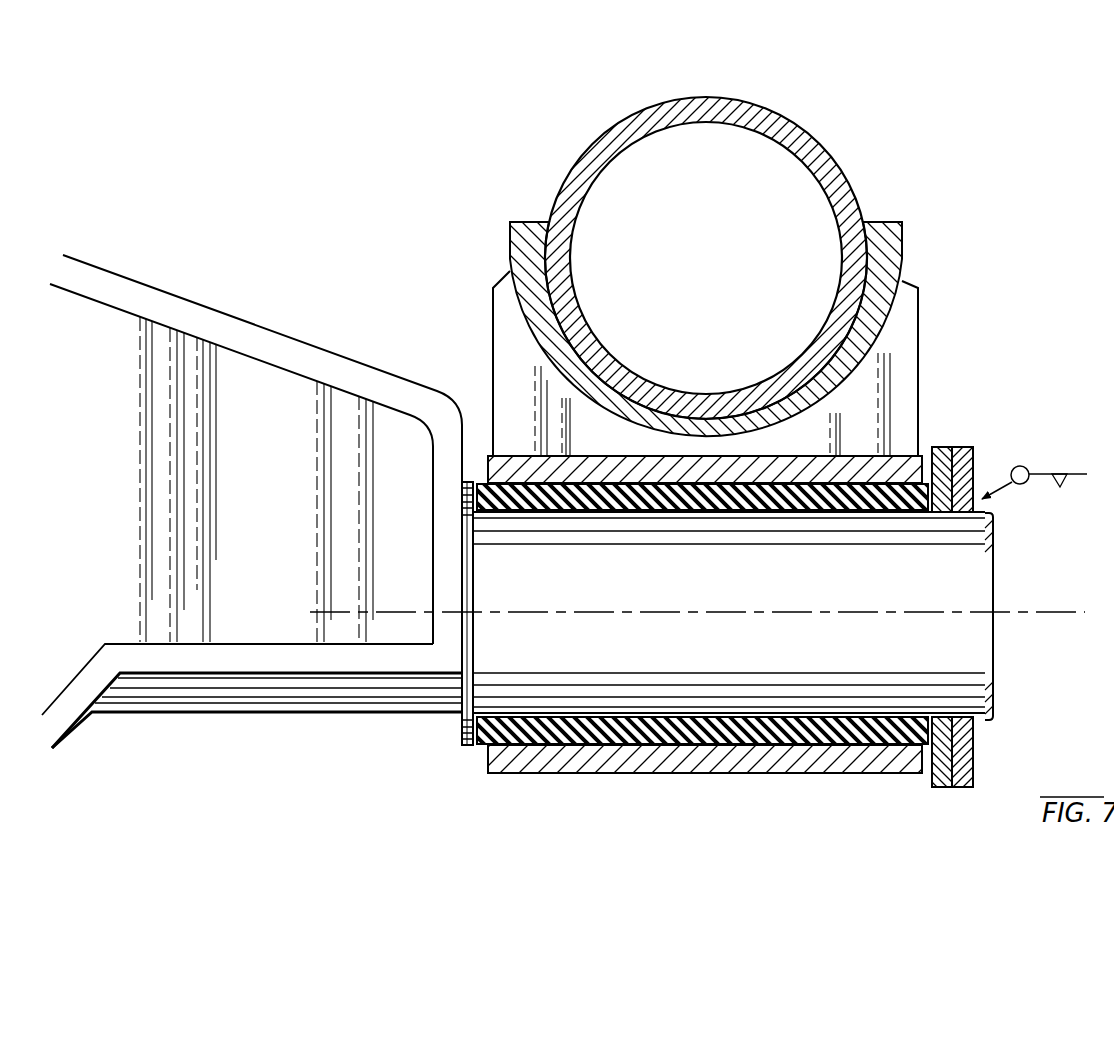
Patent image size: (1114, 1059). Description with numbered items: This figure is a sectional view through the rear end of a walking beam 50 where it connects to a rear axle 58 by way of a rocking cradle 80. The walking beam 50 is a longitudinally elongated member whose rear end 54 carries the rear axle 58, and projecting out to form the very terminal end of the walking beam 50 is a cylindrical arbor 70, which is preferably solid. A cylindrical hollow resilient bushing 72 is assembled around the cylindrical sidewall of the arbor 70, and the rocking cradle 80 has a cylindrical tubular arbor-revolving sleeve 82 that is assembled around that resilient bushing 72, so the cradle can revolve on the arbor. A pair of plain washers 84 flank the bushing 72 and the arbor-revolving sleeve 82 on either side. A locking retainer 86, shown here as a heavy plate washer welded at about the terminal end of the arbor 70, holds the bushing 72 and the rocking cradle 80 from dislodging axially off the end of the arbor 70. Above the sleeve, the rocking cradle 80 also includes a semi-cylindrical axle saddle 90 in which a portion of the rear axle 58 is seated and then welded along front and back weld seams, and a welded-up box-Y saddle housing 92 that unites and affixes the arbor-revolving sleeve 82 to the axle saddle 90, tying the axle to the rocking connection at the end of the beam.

The walking beam 50 is at (190, 295).
The rear end 54 is at (465, 434).
The rear axle 58 is at (592, 147).
The cylindrical arbor 70 is at (798, 595).
The resilient bushing 72 is at (483, 747).
The rocking cradle 80 is at (732, 506).
The cylindrical tubular arbor-revolving sleeve 82 is at (687, 778).
The plain washer 84 is at (935, 447).
The locking retainer 86 is at (960, 446).
The semi-cylindrical axle saddle 90 is at (883, 223).
The box-Y saddle housing 92 is at (920, 352).